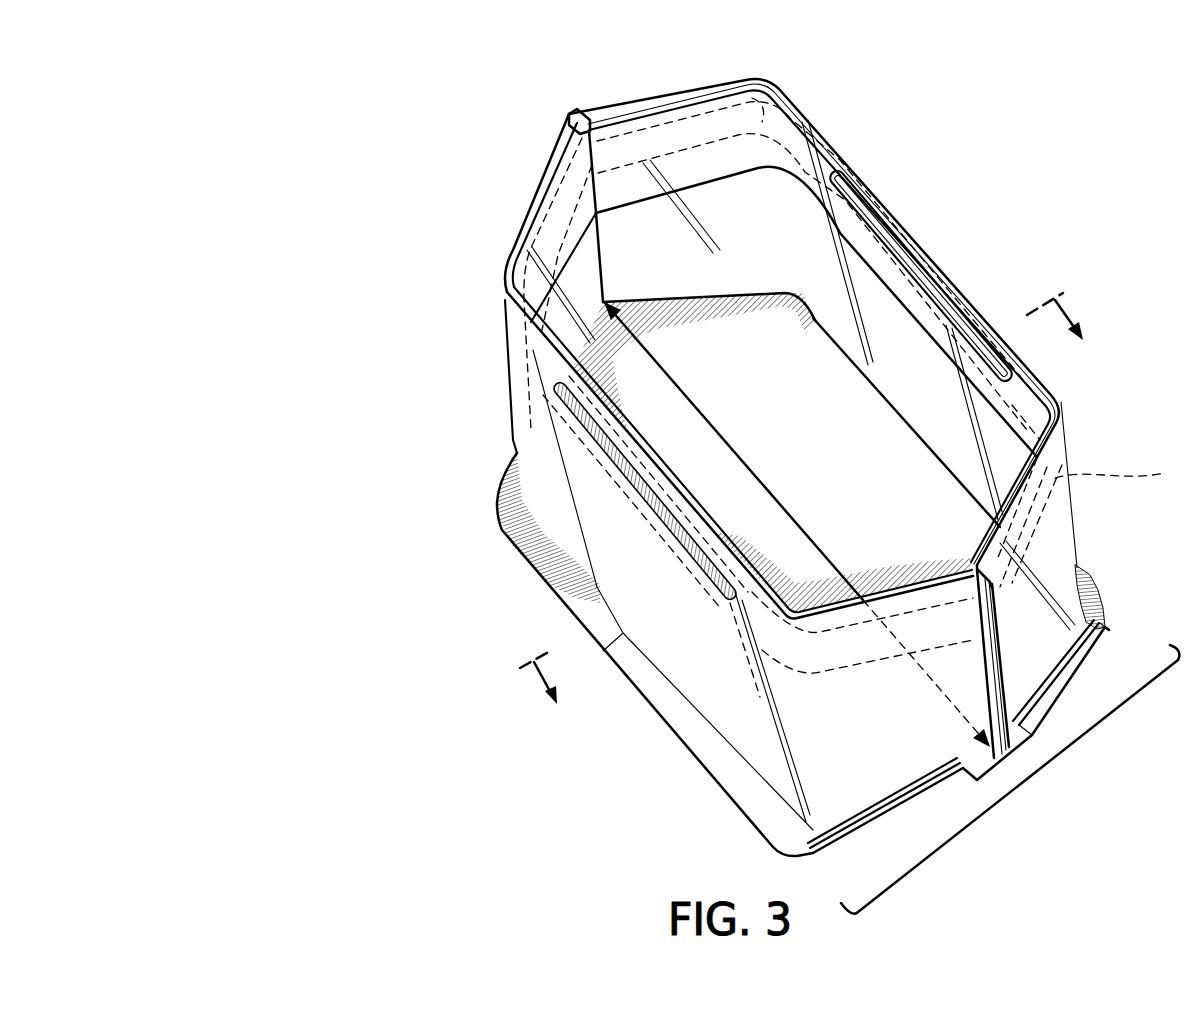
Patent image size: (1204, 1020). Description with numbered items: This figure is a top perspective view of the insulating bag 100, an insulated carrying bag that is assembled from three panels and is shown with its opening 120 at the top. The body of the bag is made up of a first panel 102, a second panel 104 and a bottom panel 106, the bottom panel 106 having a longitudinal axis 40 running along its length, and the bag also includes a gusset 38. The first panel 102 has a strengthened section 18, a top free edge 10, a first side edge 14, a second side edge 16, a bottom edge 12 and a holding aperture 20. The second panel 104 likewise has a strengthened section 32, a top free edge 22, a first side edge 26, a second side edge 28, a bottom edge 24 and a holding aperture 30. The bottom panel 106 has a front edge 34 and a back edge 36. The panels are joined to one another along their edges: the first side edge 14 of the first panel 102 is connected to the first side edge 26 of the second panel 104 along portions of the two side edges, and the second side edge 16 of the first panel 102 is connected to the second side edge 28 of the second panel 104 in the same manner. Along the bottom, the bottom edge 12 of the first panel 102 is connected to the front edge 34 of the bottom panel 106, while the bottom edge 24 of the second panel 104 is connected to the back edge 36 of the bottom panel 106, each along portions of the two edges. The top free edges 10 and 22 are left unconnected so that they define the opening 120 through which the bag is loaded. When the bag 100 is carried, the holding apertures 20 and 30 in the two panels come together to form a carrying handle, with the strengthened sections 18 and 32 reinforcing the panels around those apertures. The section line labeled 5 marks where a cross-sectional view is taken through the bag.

The insulating bag 100 is at (366, 163).
The top free edge 10 is at (510, 258).
The bottom edge 12 is at (850, 827).
The first side edge 14 is at (983, 660).
The second side edge 16 is at (572, 126).
The strengthened section 18 is at (557, 229).
The holding aperture 20 is at (693, 543).
The top free edge 22 is at (867, 183).
The bottom edge 24 is at (1109, 629).
The first side edge 26 is at (987, 660).
The second side edge 28 is at (587, 120).
The holding aperture 30 is at (886, 237).
The strengthened section 32 is at (772, 78).
The front edge 34 is at (920, 793).
The back edge 36 is at (1062, 673).
The gusset 38 is at (1022, 785).
The longitudinal axis 40 is at (747, 467).
The first panel 102 is at (723, 660).
The second panel 104 is at (762, 219).
The bottom panel 106 is at (815, 383).
The opening 120 is at (895, 342).
The section line 5- 5 is at (810, 515).